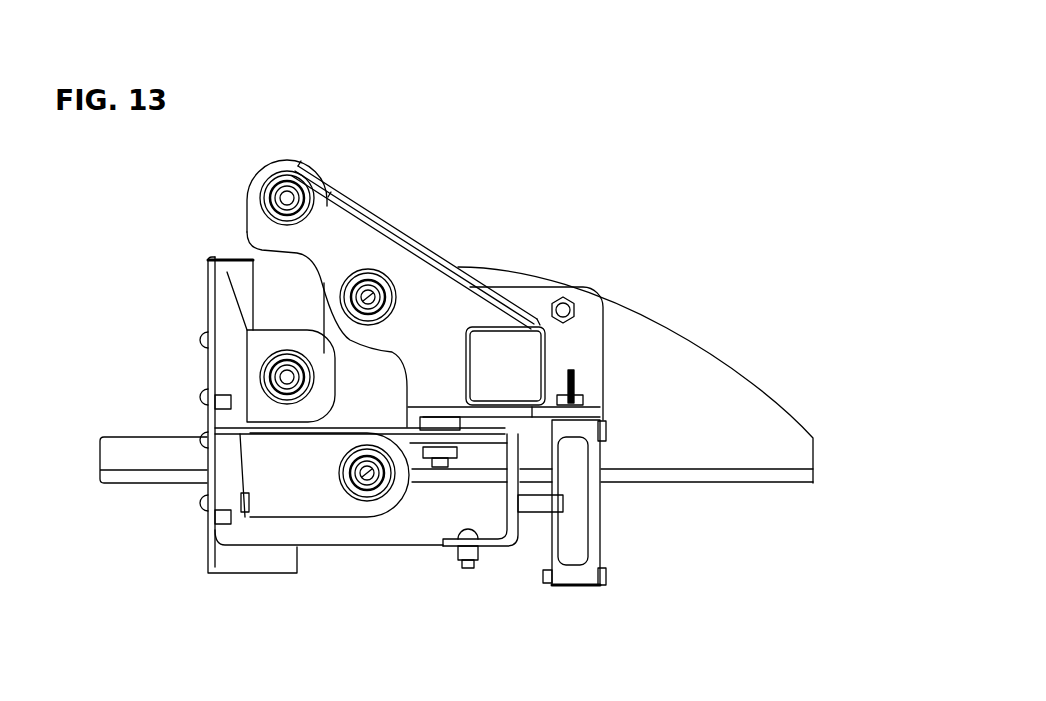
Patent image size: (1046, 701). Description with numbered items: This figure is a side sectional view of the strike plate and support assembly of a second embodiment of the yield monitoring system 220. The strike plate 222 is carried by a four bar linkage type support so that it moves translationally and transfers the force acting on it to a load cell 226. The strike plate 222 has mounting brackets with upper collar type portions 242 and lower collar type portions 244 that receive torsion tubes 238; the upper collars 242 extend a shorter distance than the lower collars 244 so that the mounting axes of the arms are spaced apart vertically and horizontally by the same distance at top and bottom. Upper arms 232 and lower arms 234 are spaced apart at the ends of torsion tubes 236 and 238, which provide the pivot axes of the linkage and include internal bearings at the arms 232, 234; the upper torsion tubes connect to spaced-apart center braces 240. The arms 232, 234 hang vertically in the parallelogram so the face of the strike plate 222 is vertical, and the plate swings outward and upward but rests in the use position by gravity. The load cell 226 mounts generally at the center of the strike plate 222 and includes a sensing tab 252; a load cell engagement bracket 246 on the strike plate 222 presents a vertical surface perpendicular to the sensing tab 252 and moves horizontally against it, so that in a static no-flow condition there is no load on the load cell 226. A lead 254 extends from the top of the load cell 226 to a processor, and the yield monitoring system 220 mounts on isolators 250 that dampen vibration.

The yield monitoring system 220 is at (594, 183).
The strike plate 222 is at (208, 310).
The load cell 226 is at (582, 515).
The upper arms 232 is at (265, 272).
The lower arms 234 is at (385, 375).
The torsion tube 236 is at (380, 273).
The torsion tube 238 is at (280, 175).
The center braces 240 is at (350, 227).
The upper collar type portions 242 is at (258, 345).
The lower collar type portions 244 is at (313, 502).
The load cell engagement bracket 246 is at (502, 545).
The isolators 250 is at (438, 427).
The sensing tab 252 is at (537, 510).
The lead 254 is at (573, 385).